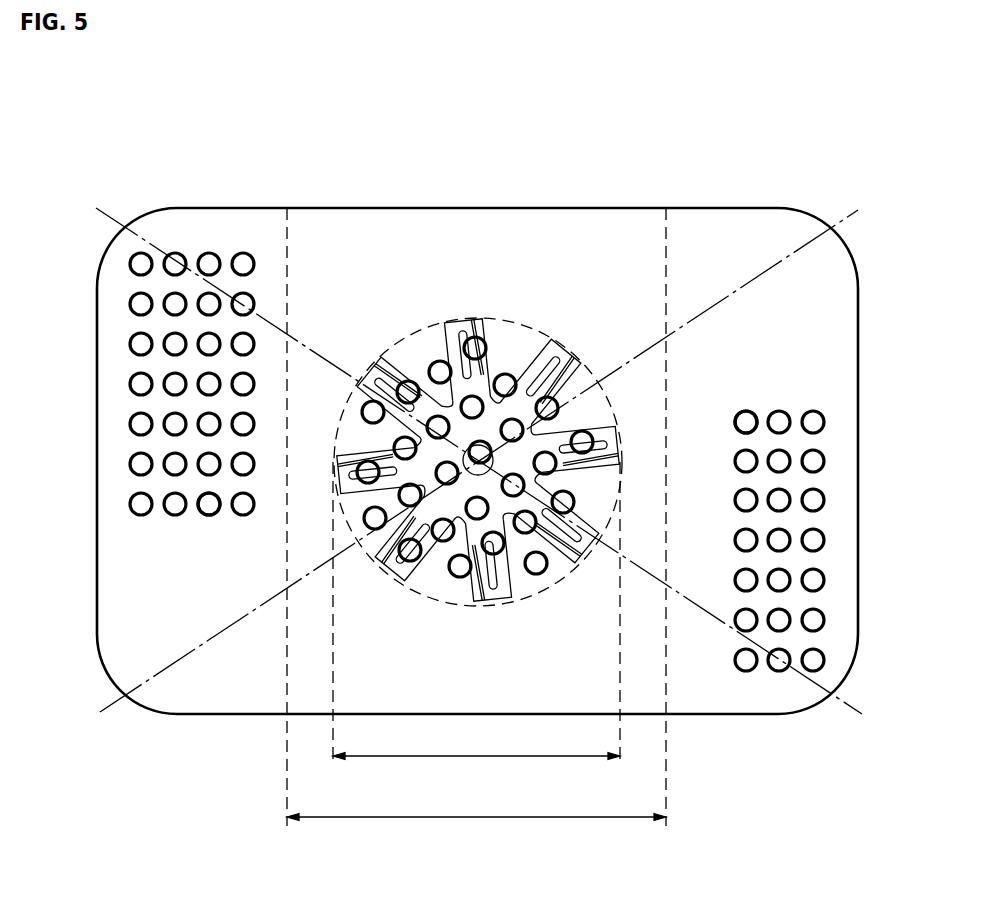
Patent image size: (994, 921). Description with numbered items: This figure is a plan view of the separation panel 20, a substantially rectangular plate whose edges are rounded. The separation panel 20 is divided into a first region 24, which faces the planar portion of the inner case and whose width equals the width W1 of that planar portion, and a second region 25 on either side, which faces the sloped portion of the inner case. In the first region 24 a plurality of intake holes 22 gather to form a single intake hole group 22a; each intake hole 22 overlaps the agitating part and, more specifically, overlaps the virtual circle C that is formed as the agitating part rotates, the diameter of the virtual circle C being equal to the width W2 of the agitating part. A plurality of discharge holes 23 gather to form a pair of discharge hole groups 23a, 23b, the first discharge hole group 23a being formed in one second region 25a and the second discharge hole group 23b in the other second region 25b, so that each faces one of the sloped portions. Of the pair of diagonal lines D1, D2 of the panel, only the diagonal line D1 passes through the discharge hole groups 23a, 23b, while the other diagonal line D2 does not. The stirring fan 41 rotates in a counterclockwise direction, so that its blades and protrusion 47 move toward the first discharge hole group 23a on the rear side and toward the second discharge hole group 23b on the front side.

The separation panel 20 is at (812, 165).
The intake hole 22 is at (452, 578).
The intake hole group 22a is at (536, 577).
The discharge hole 23 is at (197, 518).
The first discharge hole group 23a is at (120, 300).
The second discharge hole group 23b is at (833, 578).
The first region 24 is at (473, 222).
The second region 25 is at (475, 174).
The one second region 25a is at (202, 222).
The other second region 25b is at (748, 222).
The stirring fan 41 is at (557, 343).
The protrusion 47 is at (443, 338).
The virtual circle C is at (512, 322).
The diagonal line D1 is at (466, 451).
The diagonal line D2 is at (464, 471).
The width of the planar portion W1 is at (476, 837).
The width of the agitating part W2 is at (476, 630).